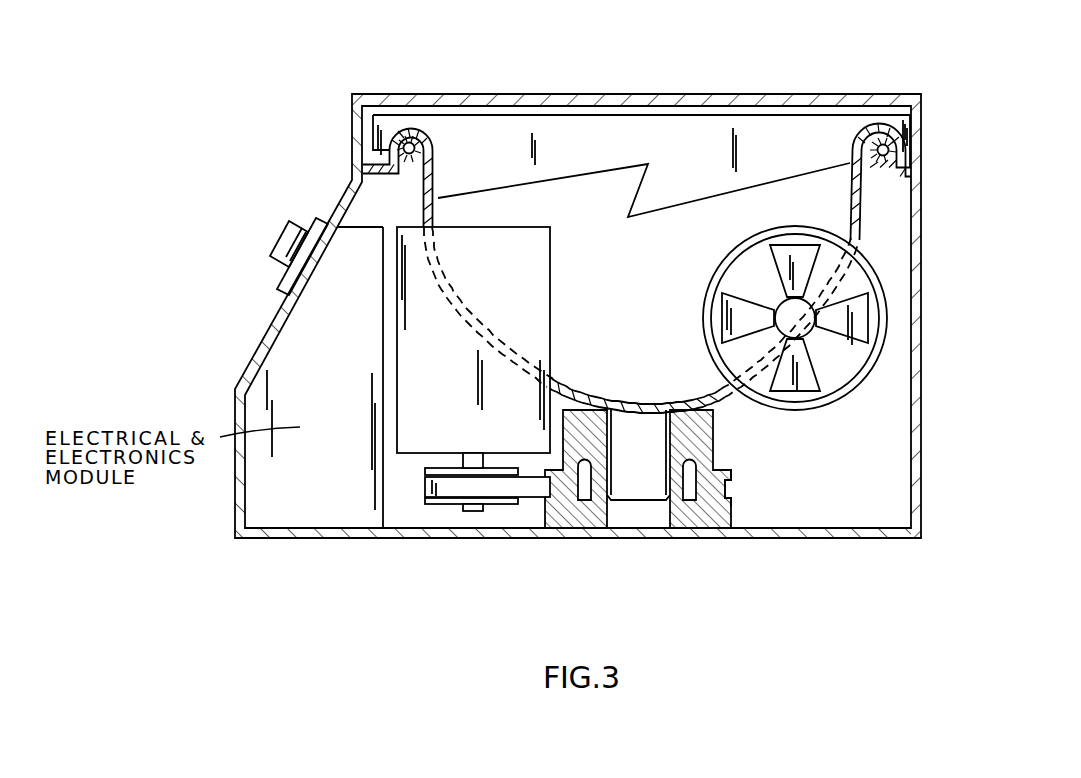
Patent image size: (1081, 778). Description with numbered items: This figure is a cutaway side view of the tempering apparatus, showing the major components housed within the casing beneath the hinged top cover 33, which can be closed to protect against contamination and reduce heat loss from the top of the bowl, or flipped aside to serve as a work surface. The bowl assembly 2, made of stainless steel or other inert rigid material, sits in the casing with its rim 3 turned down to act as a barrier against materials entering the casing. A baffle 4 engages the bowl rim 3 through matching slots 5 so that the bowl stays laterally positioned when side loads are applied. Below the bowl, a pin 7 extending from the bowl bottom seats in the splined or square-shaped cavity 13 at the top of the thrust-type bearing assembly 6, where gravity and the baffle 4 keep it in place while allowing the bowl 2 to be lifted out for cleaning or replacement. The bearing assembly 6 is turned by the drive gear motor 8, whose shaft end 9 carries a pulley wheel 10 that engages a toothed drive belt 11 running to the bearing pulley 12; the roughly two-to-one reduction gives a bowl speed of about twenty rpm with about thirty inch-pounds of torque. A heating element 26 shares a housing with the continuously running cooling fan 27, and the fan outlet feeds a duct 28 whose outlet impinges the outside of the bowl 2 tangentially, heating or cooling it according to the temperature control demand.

The bowl assembly 2 is at (838, 198).
The rim of the bowl 3 is at (915, 148).
The baffle 4 is at (568, 134).
The matching slots 5 is at (898, 126).
The bearing assembly 6 is at (714, 524).
The pin 7 is at (623, 483).
The drive gear motor 8 is at (405, 317).
The shaft end 9 is at (470, 511).
The pulley wheel 10 is at (426, 500).
The toothed drive belt 11 is at (534, 494).
The pulley 12 is at (729, 488).
The cavity 13 is at (653, 522).
The heating element 26 is at (880, 318).
The cooling fan 27 is at (880, 318).
The duct 28 is at (848, 364).
The top cover 33 is at (752, 98).